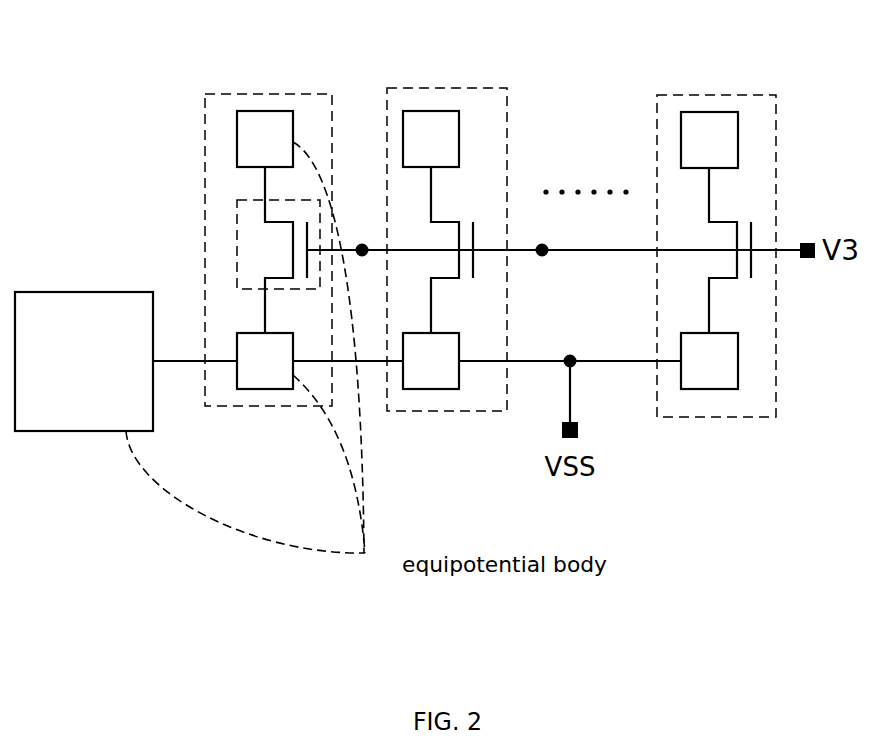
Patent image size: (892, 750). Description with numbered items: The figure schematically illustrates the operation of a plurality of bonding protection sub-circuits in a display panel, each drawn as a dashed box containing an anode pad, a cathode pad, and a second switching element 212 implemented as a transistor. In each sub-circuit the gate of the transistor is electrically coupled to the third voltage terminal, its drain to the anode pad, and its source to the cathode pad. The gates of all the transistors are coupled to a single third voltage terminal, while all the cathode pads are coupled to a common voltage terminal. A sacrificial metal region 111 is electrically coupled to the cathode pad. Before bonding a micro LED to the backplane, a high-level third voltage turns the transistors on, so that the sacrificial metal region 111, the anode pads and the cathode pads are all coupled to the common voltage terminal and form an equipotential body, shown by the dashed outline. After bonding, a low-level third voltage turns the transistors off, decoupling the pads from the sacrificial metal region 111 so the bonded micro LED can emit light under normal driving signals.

The sacrificial metal region 111 is at (84, 361).
The second switching element 212 is at (236, 265).